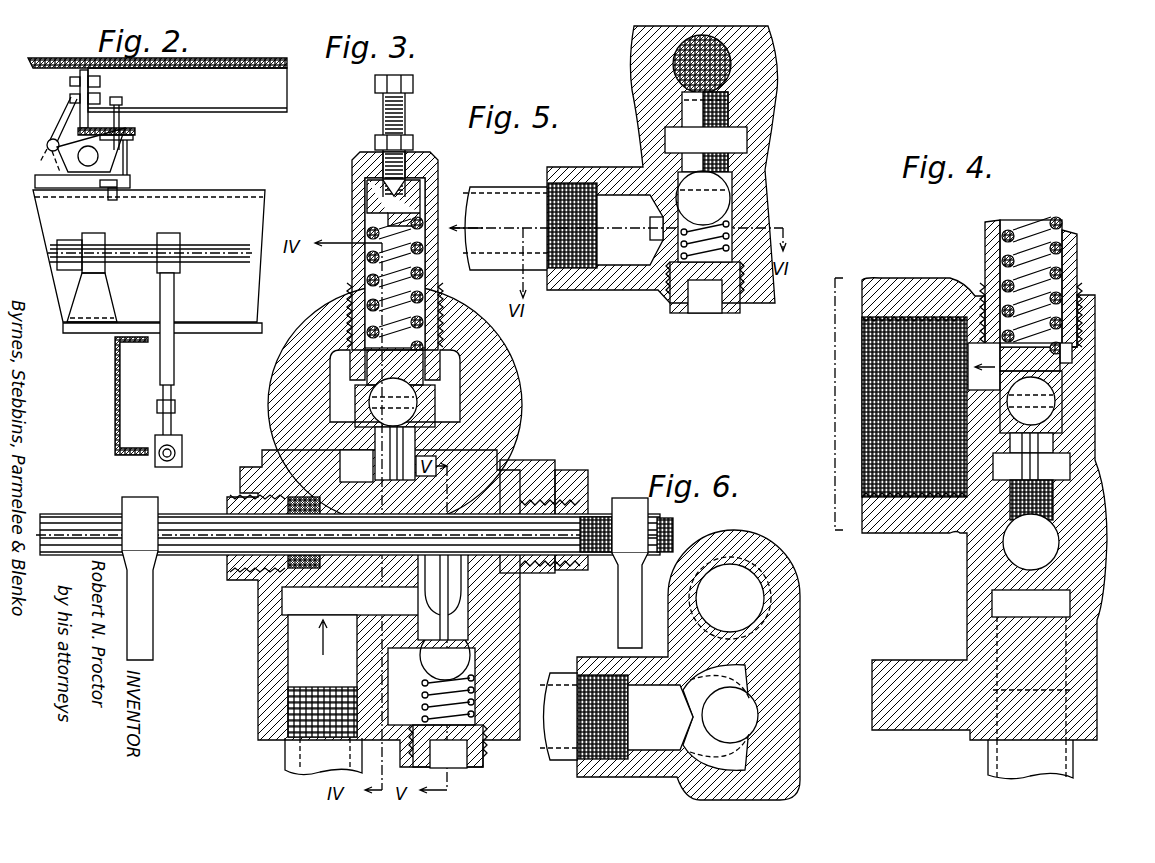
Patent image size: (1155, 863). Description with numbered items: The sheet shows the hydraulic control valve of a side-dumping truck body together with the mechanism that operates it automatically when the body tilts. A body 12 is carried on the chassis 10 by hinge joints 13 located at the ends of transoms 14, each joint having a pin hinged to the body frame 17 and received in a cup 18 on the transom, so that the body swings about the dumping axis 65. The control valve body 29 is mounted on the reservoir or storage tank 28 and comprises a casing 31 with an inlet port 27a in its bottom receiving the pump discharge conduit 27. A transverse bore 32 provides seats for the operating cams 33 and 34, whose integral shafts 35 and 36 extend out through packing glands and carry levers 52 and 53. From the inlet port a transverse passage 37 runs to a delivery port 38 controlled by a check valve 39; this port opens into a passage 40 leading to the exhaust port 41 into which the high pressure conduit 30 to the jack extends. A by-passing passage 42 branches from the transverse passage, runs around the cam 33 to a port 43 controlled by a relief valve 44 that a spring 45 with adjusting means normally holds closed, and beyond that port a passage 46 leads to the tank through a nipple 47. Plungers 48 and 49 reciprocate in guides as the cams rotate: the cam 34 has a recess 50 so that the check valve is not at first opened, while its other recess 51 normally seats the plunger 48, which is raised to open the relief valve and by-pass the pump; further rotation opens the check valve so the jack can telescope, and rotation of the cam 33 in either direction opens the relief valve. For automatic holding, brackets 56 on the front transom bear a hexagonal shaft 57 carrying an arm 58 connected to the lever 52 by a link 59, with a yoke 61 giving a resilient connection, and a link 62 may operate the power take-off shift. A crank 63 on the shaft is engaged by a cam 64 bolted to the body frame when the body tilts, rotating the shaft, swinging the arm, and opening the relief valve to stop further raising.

In FIG. 2, the chassis 10 is at (115, 395).
In FIG. 2, the body 12 is at (224, 68).
In FIG. 2, the hinge joint 13 is at (125, 128).
In FIG. 2, the transom 14 is at (188, 212).
In FIG. 2, the body frame 17 is at (56, 70).
In FIG. 2, the cup 18 is at (130, 192).
In FIG. 3, the discharge conduit 27 is at (300, 748).
In FIG. 6, the discharge conduit 27 is at (718, 542).
In FIG. 4, the discharge conduit 27 is at (1015, 760).
In FIG. 3, the inlet port 27a is at (290, 700).
In FIG. 6, the inlet port 27a is at (752, 562).
In FIG. 4, the inlet port 27a is at (998, 652).
In FIG. 4, the reservoir or storage tank 28 is at (830, 262).
In FIG. 3, the control valve body 29 is at (256, 635).
In FIG. 5, the high pressure conduit 30 is at (486, 198).
In FIG. 6, the high pressure conduit 30 is at (567, 737).
In FIG. 3, the casing 31 is at (513, 387).
In FIG. 4, the casing 31 is at (984, 509).
In FIG. 3, the transverse bore 32 is at (478, 498).
In FIG. 5, the transverse bore 32 is at (728, 92).
In FIG. 4, the transverse bore 32 is at (1008, 560).
In FIG. 3, the valve operating cam 33 is at (356, 467).
In FIG. 4, the valve operating cam 33 is at (1012, 542).
In FIG. 3, the valve operating cam 34 is at (455, 493).
In FIG. 5, the valve operating cam 34 is at (688, 64).
In FIG. 3, the operating shaft 35 is at (176, 516).
In FIG. 3, the operating shaft 36 is at (592, 516).
In FIG. 3, the transverse passage 37 is at (387, 612).
In FIG. 5, the transverse passage 37 is at (747, 142).
In FIG. 4, the transverse passage 37 is at (1000, 602).
In FIG. 3, the delivery port 38 is at (495, 628).
In FIG. 5, the delivery port 38 is at (727, 178).
In FIG. 6, the delivery port 38 is at (688, 665).
In FIG. 3, the check valve 39 is at (468, 656).
In FIG. 5, the check valve 39 is at (712, 203).
In FIG. 6, the check valve 39 is at (724, 716).
In FIG. 3, the passage 40 is at (488, 745).
In FIG. 5, the passage 40 is at (637, 253).
In FIG. 6, the passage 40 is at (667, 752).
In FIG. 5, the discharge or exhaust port 41 is at (588, 268).
In FIG. 6, the discharge or exhaust port 41 is at (610, 758).
In FIG. 3, the by-passing passage 42 is at (277, 447).
In FIG. 4, the by-passing passage 42 is at (1066, 470).
In FIG. 3, the port 43 is at (440, 427).
In FIG. 4, the port 43 is at (1052, 428).
In FIG. 3, the relief valve 44 is at (410, 405).
In FIG. 4, the relief valve 44 is at (1040, 397).
In FIG. 3, the spring 45 is at (352, 268).
In FIG. 4, the spring 45 is at (1077, 258).
In FIG. 3, the passage 46 is at (433, 373).
In FIG. 4, the passage 46 is at (1000, 360).
In FIG. 4, the nipple 47 is at (845, 530).
In FIG. 3, the plunger 48 is at (270, 430).
In FIG. 4, the plunger 48 is at (1055, 497).
In FIG. 3, the plunger 49 is at (560, 596).
In FIG. 5, the plunger 49 is at (826, 129).
In FIG. 3, the recess 50 is at (480, 490).
In FIG. 5, the recess 50 is at (727, 82).
In FIG. 3, the recess 51 is at (434, 572).
In FIG. 5, the recess 51 is at (740, 37).
In FIG. 3, the lever 52 is at (143, 600).
In FIG. 3, the lever 53 is at (620, 622).
In FIG. 2, the bracket 56 is at (104, 291).
In FIG. 2, the hexagonal shaft 57 is at (205, 250).
In FIG. 2, the arm 58 is at (175, 366).
In FIG. 2, the link 59 is at (160, 458).
In FIG. 2, the yoke 61 is at (181, 440).
In FIG. 2, the link 62 is at (176, 404).
In FIG. 2, the crank 63 is at (115, 193).
In FIG. 2, the cam 64 is at (48, 147).
In FIG. 2, the dumping axis 65 is at (98, 157).